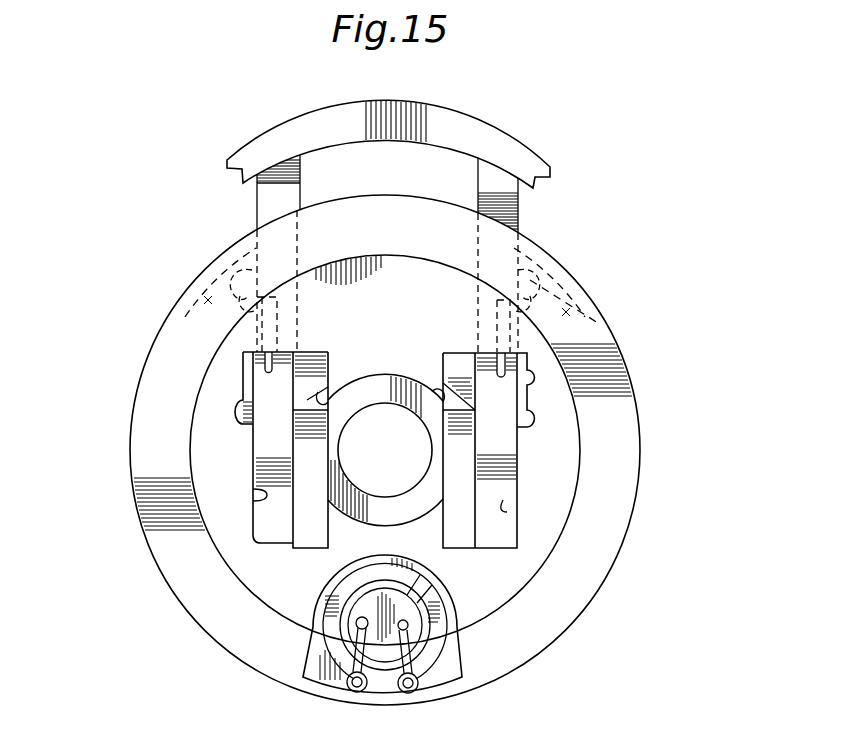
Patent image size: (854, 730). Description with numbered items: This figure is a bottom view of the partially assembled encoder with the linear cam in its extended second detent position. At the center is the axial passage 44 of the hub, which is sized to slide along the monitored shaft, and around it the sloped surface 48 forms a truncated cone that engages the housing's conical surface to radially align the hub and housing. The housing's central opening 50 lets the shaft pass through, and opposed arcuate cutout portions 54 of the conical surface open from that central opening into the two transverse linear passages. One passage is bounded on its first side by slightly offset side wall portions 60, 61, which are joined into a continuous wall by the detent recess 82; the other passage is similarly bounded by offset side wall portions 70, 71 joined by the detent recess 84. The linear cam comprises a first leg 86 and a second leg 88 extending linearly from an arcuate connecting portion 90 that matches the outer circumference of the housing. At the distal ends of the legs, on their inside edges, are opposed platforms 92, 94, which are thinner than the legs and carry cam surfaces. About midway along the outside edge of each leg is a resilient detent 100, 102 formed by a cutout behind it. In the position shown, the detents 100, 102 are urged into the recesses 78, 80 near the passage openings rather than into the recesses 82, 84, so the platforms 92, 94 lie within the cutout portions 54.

The axial passage 44 is at (420, 430).
The sloped surface 48 is at (347, 502).
The central opening 50 is at (372, 380).
The arcuate cutout portions 54 is at (325, 400).
The side wall portion 60 is at (256, 500).
The side wall portion 61 is at (247, 357).
The side wall portion 70 is at (530, 383).
The side wall portion 71 is at (507, 502).
The recess 78 is at (245, 243).
The recess 80 is at (552, 268).
The detent recess 82 is at (247, 427).
The detent recess 84 is at (528, 430).
The first leg 86 is at (520, 210).
The second leg 88 is at (284, 198).
The connecting portion 90 is at (487, 127).
The platform 92 is at (462, 542).
The platform 94 is at (313, 480).
The resilient detent 100 is at (598, 310).
The resilient detent 102 is at (220, 300).